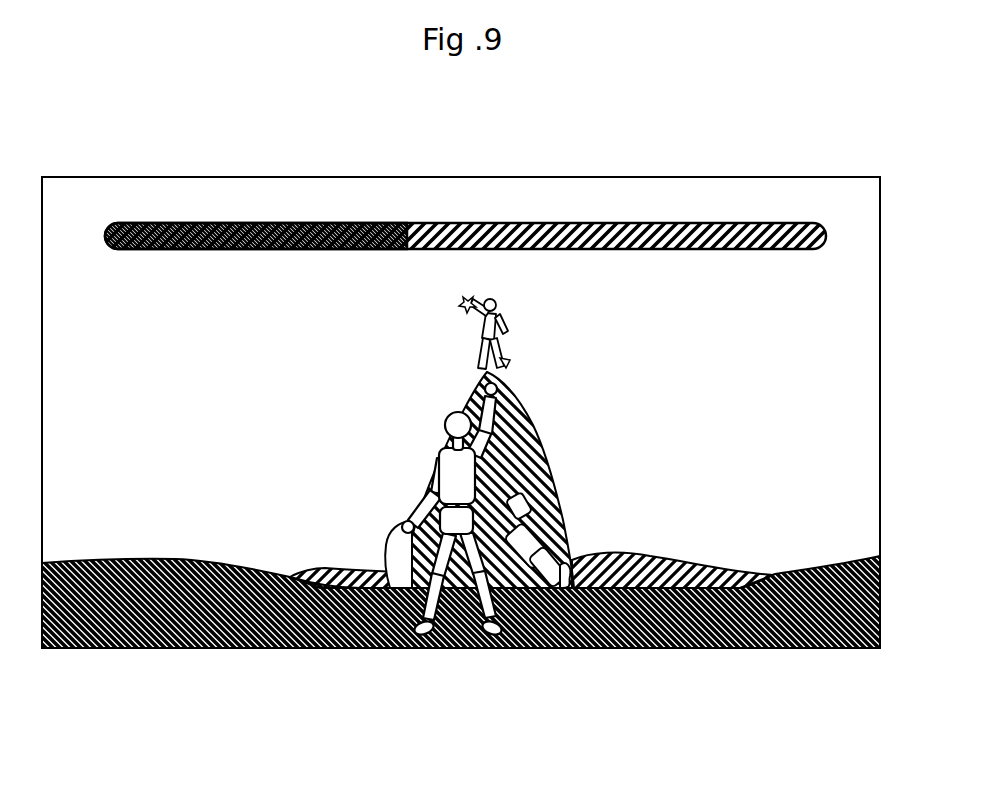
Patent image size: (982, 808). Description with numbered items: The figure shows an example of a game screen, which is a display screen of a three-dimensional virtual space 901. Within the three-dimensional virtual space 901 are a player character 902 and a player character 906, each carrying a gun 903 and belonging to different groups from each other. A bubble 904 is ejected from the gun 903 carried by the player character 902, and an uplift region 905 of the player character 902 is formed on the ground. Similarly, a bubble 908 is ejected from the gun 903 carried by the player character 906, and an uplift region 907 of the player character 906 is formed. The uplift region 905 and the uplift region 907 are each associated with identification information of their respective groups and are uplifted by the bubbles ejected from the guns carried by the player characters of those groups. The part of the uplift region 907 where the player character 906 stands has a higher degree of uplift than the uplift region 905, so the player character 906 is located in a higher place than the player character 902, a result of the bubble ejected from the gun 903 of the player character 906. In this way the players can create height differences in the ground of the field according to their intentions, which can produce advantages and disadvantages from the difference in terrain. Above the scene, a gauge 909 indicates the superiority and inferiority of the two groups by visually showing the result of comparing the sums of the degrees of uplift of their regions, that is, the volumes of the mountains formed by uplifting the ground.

The three-dimensional virtual space 901 is at (76, 225).
The player character 902 is at (468, 620).
The gun 903 is at (464, 298).
The bubble 904 is at (413, 522).
The uplift region 905 is at (742, 625).
The player character 906 is at (492, 300).
The uplift region 907 is at (548, 440).
The bubble 908 is at (553, 600).
The gauge 909 is at (803, 222).